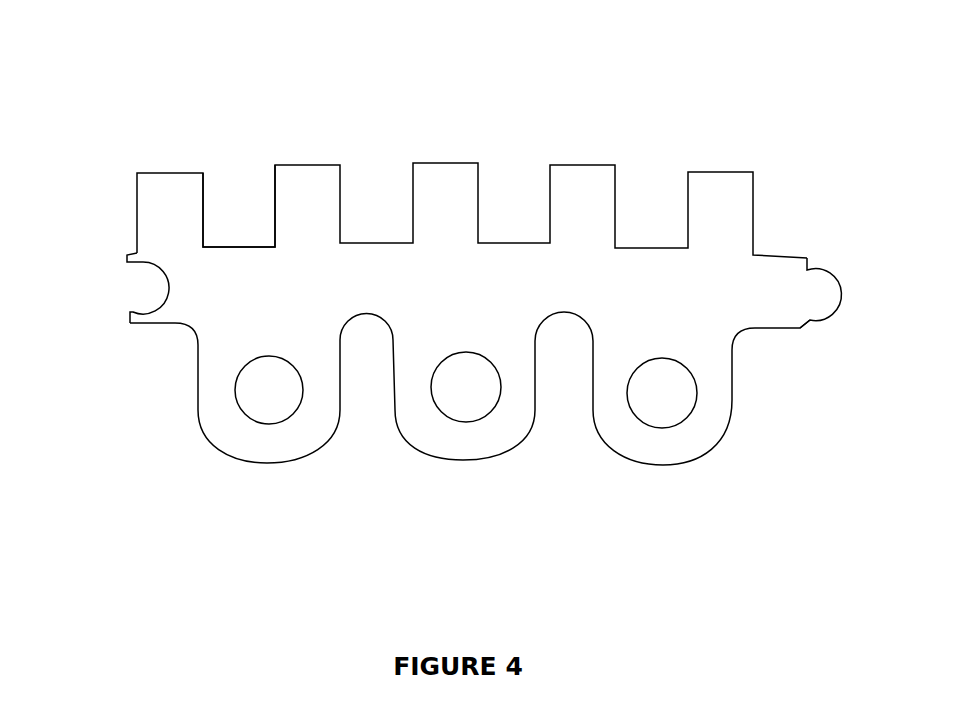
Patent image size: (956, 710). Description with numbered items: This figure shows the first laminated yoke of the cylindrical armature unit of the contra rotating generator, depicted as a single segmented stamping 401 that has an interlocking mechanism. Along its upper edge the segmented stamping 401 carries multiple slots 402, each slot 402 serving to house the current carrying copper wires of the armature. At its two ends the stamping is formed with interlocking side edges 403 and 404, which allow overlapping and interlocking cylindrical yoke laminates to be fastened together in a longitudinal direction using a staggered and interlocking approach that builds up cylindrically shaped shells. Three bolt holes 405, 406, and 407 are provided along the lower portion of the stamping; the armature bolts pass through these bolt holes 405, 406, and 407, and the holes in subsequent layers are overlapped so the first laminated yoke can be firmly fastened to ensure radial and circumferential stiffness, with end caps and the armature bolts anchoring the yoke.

The segmented stamping 401 is at (671, 178).
The slot 402 is at (241, 215).
The interlocking side edge 403 is at (136, 281).
The interlocking side edge 404 is at (808, 291).
The bolt hole 405 is at (662, 404).
The bolt hole 406 is at (470, 381).
The bolt hole 407 is at (263, 393).